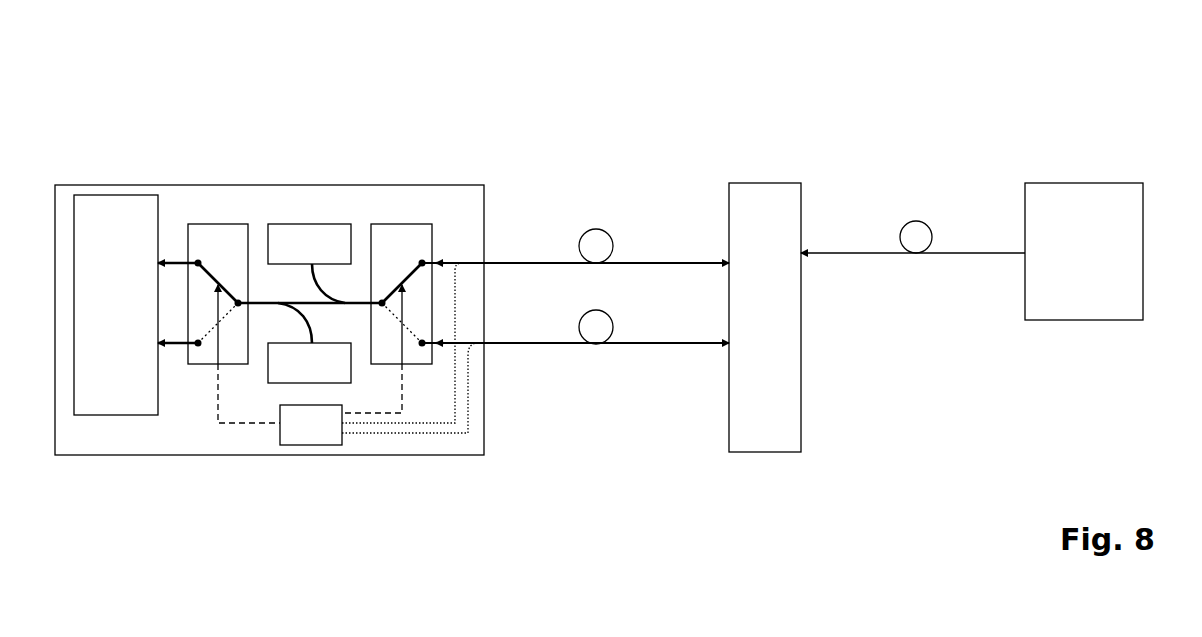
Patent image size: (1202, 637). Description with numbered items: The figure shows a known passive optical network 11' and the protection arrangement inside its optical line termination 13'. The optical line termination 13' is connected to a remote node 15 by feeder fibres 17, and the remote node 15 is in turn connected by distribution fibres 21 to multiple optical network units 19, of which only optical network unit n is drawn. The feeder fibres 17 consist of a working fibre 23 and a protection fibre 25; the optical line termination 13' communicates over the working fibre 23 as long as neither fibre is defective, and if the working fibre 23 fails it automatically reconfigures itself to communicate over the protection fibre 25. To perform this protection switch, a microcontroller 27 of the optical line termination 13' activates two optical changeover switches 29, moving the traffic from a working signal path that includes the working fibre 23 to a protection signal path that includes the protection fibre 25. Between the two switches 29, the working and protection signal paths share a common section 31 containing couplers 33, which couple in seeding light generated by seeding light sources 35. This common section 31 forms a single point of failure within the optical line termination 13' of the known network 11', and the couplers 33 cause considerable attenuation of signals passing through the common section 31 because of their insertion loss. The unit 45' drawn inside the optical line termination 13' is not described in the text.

The passive optical network 11' is at (593, 278).
The optical line termination 13' is at (269, 291).
The OLT transceiver unit 45' is at (129, 273).
The optical changeover switches 29 is at (205, 224).
The common section 31 is at (345, 287).
The couplers 33 is at (278, 303).
The seeding light sources 35 is at (293, 224).
The microcontroller 27 is at (322, 445).
The feeder fibres 17 is at (606, 176).
The working fibre 23 is at (630, 258).
The protection fibre 25 is at (625, 336).
The remote node 15 is at (746, 183).
The distribution fibres 21 is at (905, 172).
The optical network units 19 is at (1040, 183).